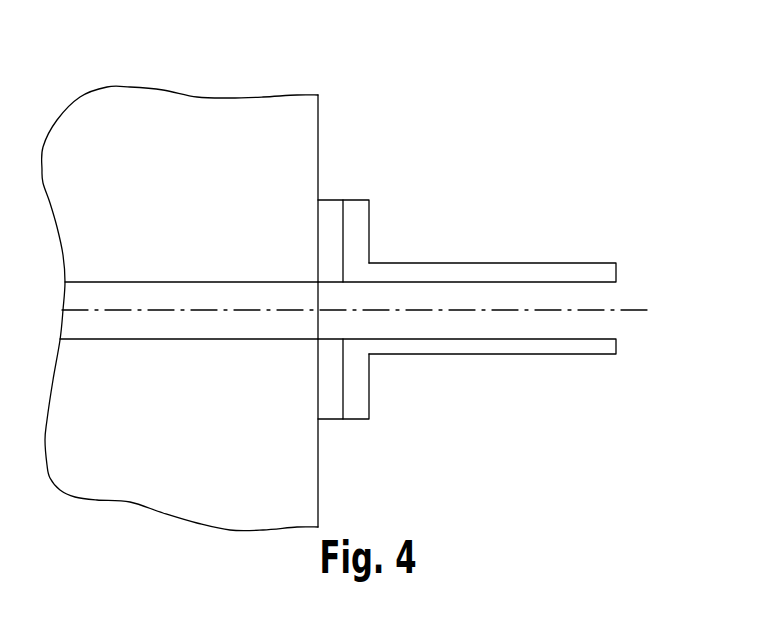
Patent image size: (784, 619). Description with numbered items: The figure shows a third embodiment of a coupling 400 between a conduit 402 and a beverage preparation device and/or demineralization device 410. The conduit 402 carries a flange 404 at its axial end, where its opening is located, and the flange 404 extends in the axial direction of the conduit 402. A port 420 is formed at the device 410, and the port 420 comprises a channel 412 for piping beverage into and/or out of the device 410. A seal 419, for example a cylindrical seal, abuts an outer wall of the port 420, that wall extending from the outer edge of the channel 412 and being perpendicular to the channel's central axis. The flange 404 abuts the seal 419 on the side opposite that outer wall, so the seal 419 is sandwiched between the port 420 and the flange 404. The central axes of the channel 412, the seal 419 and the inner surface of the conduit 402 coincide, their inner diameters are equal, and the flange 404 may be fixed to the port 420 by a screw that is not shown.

The coupling 400 is at (590, 88).
The conduit 402 is at (583, 270).
The flange 404 is at (362, 237).
The beverage preparation device and/or demineralization device 410 is at (305, 480).
The channel 412 is at (147, 292).
The seal 419 is at (330, 205).
The port 420 is at (455, 297).